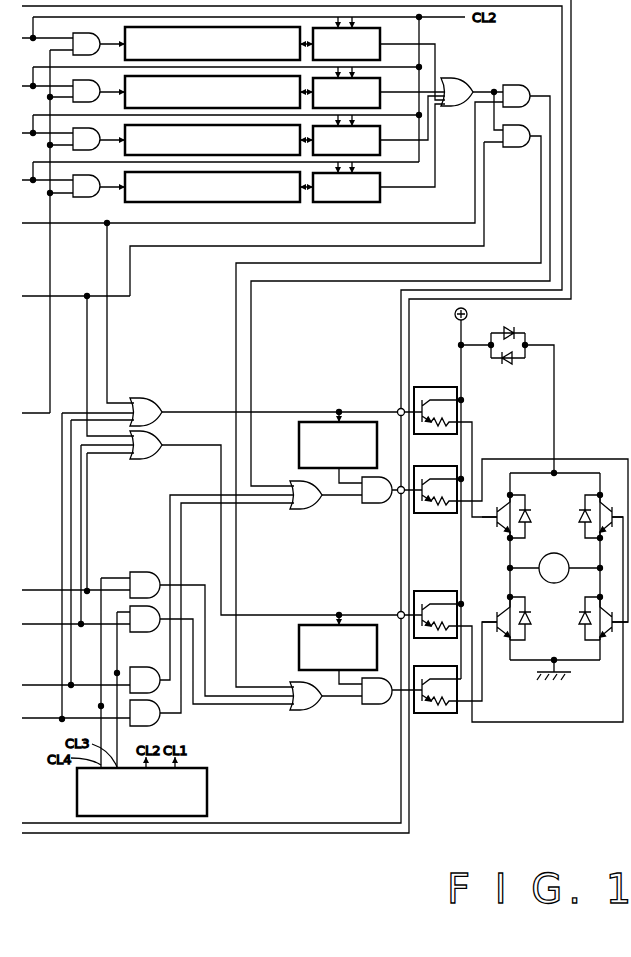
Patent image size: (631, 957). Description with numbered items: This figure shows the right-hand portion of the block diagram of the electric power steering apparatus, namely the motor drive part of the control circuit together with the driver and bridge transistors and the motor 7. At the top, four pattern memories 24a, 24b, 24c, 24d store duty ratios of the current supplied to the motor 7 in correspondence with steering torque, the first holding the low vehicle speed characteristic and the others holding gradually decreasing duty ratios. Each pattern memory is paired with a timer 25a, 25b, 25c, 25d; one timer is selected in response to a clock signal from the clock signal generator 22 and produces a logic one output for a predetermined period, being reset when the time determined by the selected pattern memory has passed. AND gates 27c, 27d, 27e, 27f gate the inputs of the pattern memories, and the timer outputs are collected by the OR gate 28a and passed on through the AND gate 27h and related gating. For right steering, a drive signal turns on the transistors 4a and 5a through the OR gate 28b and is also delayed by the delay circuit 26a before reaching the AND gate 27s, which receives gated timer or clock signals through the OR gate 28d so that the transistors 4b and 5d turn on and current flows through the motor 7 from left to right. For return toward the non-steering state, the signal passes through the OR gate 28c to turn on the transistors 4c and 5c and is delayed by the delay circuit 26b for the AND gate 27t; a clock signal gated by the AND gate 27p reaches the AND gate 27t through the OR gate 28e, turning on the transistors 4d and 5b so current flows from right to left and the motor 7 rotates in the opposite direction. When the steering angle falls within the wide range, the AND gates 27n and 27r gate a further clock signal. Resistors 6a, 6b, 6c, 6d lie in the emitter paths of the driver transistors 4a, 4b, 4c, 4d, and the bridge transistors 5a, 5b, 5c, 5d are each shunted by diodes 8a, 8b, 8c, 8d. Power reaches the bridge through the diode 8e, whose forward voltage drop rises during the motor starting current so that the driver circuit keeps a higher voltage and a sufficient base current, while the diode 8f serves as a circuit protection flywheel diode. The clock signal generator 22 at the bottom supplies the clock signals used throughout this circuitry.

The pattern memory 24a is at (127, 28).
The pattern memory 24b is at (127, 77).
The pattern memory 24c is at (127, 126).
The pattern memory 24d is at (125, 202).
The timer 25a is at (383, 33).
The timer 25b is at (383, 81).
The timer 25c is at (383, 129).
The timer 25d is at (383, 201).
The AND gate 27c is at (78, 33).
The AND gate 27d is at (80, 80).
The AND gate 27e is at (78, 150).
The AND gate 27f is at (80, 197).
The AND gate 27h is at (512, 148).
The AND gate 27n is at (152, 572).
The AND gate 27p is at (140, 633).
The AND gate 27r is at (160, 722).
The AND gate 27s is at (372, 504).
The AND gate 27t is at (366, 705).
The OR gate 28a is at (472, 78).
The OR gate 28b is at (155, 398).
The OR gate 28c is at (157, 458).
The OR gate 28d is at (300, 510).
The OR gate 28e is at (300, 710).
The delay circuit 26a is at (299, 430).
The delay circuit 26b is at (299, 640).
The transistor 4a is at (448, 387).
The transistor 4b is at (428, 466).
The transistor 4c is at (428, 591).
The transistor 4d is at (427, 666).
The resistor 6a is at (449, 434).
The resistor 6b is at (449, 513).
The resistor 6c is at (449, 638).
The resistor 6d is at (449, 713).
The transistor 5a is at (498, 507).
The transistor 5b is at (498, 612).
The transistor 5c is at (611, 506).
The transistor 5d is at (612, 637).
The diode 8a is at (531, 515).
The diode 8b is at (531, 617).
The diode 8c is at (579, 518).
The diode 8d is at (579, 625).
The diode 8e is at (512, 330).
The diode 8f is at (508, 365).
The motor 7 is at (540, 562).
The clock signal generator 22 is at (207, 790).